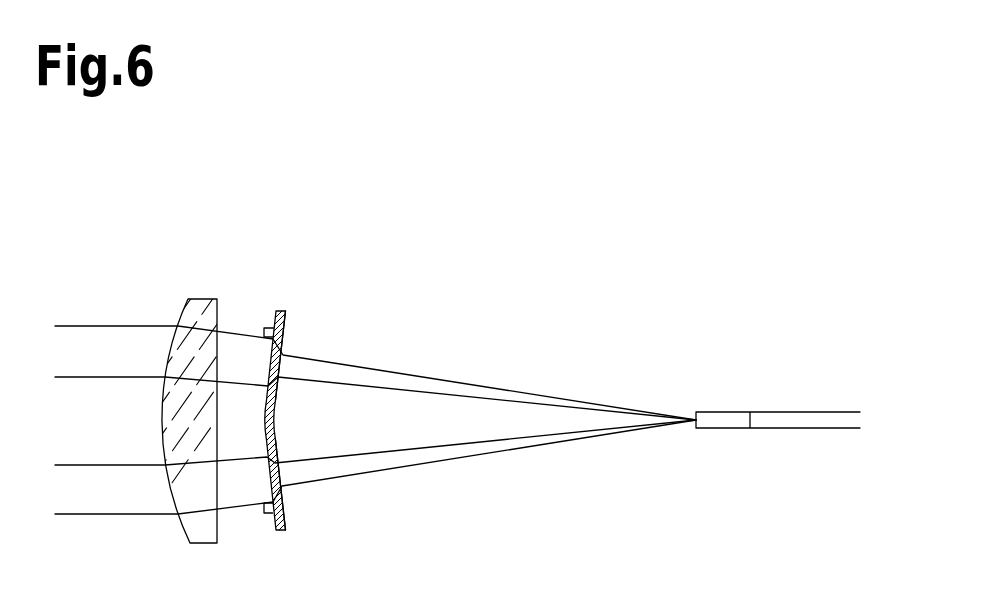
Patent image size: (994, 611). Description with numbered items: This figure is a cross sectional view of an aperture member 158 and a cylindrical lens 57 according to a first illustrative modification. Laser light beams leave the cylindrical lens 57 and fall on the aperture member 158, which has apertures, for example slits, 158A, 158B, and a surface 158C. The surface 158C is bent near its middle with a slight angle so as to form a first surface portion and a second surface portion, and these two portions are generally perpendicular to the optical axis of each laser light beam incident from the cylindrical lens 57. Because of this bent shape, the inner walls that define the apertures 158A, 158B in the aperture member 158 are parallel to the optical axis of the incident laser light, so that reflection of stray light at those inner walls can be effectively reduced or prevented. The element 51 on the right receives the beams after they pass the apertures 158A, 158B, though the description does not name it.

The cylindrical lens 57 is at (197, 298).
The aperture member 158 is at (296, 307).
The aperture 158A is at (288, 367).
The aperture 158B is at (289, 473).
The surface 158C is at (271, 327).
The optical fiber 51 is at (771, 410).